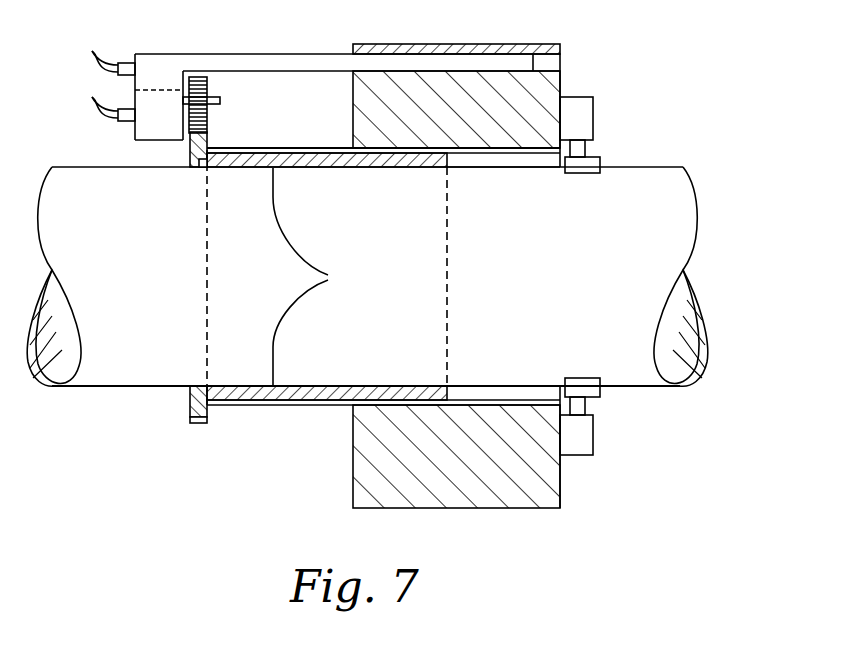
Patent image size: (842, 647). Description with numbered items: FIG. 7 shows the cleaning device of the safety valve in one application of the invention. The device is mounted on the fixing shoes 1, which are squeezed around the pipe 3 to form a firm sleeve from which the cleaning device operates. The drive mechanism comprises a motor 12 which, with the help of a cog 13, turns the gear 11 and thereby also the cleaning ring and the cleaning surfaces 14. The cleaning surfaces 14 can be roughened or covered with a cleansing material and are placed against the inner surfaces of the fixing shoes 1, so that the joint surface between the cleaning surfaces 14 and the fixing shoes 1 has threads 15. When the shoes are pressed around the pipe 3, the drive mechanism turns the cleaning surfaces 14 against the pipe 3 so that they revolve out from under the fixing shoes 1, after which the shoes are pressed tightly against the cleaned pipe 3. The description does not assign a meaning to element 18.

The fixing shoes 1 is at (542, 98).
The pipe 3 is at (564, 274).
The gear 11 is at (207, 133).
The motor 12 is at (142, 132).
The cog 13 is at (197, 77).
The cleaning surfaces 14 is at (318, 277).
The threads 15 is at (305, 403).
The flange 18 is at (236, 396).